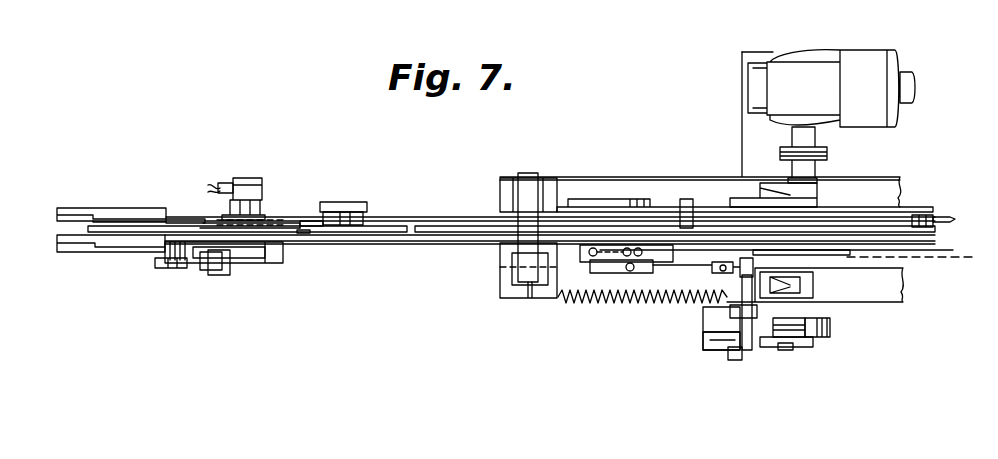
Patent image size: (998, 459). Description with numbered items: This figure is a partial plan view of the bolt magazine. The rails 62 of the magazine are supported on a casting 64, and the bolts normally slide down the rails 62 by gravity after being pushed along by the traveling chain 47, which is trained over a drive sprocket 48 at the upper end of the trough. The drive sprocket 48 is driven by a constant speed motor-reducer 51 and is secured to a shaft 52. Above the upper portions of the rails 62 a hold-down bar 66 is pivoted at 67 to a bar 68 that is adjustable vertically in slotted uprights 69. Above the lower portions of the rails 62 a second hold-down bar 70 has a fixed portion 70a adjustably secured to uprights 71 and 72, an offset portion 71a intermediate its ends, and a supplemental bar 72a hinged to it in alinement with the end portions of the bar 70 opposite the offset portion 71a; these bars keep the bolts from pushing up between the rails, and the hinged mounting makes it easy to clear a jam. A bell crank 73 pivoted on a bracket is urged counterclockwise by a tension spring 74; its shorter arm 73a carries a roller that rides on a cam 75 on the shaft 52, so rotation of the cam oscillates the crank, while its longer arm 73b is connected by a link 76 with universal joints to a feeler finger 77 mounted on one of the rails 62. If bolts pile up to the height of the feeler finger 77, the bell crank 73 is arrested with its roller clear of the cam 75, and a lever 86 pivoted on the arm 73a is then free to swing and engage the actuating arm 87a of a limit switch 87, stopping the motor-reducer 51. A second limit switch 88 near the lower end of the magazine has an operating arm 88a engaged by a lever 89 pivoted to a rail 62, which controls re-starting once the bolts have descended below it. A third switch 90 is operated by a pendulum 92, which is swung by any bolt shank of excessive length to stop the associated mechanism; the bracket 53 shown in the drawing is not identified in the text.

The traveling chain 47 is at (966, 247).
The drive sprocket 48 is at (837, 262).
The constant speed motor-reducer 51 is at (858, 55).
The shaft 52 is at (838, 295).
The bracket 53 is at (753, 190).
The rails 62 is at (428, 228).
The casting 64 is at (522, 270).
The hold-down bar 66 is at (487, 232).
The pivot 67 is at (933, 217).
The bar 68 is at (877, 208).
The slotted uprights 69 is at (617, 200).
The hold-down bar 70 is at (325, 220).
The fixed portion 70a is at (345, 228).
The upright 71 is at (123, 215).
The offset portion 71a is at (292, 215).
The upright 72 is at (350, 202).
The supplemental bar 72a is at (280, 230).
The bell crank 73 is at (760, 340).
The shorter arm 73a is at (812, 309).
The longer arm 73b is at (730, 307).
The tension spring 74 is at (627, 302).
The cam 75 is at (790, 338).
The link 76 is at (700, 268).
The feeler finger 77 is at (613, 268).
The lever 86 is at (785, 348).
The limit switch 87 is at (707, 338).
The actuating arm 87a is at (730, 350).
The second limit switch 88 is at (252, 188).
The operating arm 88a is at (240, 175).
The lever 89 is at (240, 248).
The third switch 90 is at (217, 263).
The pendulum 92 is at (170, 267).